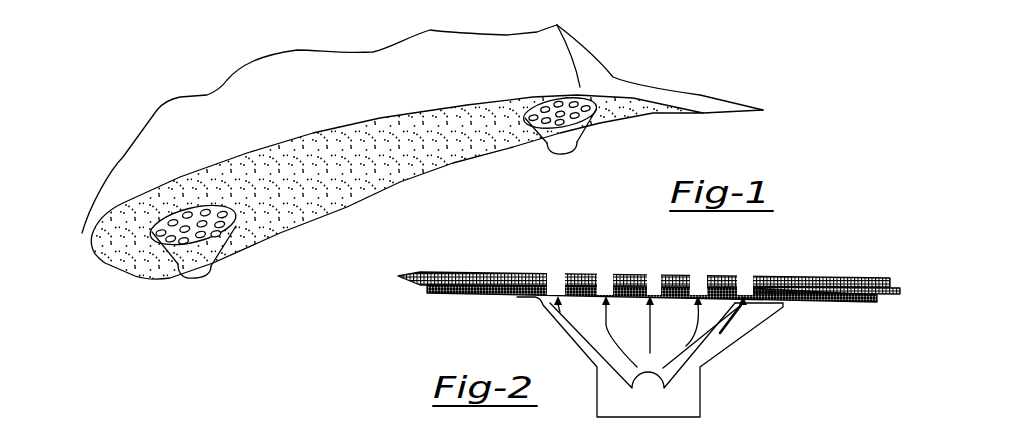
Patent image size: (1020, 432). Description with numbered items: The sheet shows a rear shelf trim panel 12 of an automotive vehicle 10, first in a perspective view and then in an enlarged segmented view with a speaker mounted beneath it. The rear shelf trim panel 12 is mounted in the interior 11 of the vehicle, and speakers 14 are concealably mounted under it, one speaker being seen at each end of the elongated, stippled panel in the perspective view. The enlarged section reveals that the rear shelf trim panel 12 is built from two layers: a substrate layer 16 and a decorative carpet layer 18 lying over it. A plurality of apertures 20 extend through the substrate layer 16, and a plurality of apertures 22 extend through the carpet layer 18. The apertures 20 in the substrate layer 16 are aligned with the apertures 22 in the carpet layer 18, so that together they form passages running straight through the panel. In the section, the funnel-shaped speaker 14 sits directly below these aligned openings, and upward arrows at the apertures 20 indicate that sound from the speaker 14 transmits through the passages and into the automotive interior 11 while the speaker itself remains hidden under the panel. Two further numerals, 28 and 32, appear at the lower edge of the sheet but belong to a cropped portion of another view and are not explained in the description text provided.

In FIG. 1, the automotive vehicle 10 is at (613, 51).
In FIG. 1, the interior 11 is at (471, 72).
In FIG. 2, the interior 11 is at (818, 261).
In FIG. 1, the rear shelf trim panel 12 is at (633, 110).
In FIG. 2, the rear shelf trim panel 12 is at (860, 263).
In FIG. 1, the speaker 14 is at (207, 267).
In FIG. 2, the speaker 14 is at (712, 345).
In FIG. 2, the substrate layer 16 is at (873, 297).
In FIG. 2, the decorative carpet layer 18 is at (893, 288).
In FIG. 2, the apertures 20 is at (552, 306).
In FIG. 1, the apertures 22 is at (453, 133).
In FIG. 2, the apertures 22 is at (650, 272).
In FIG. 2, the element 28 is at (237, 431).
In FIG. 2, the element 32 is at (353, 431).